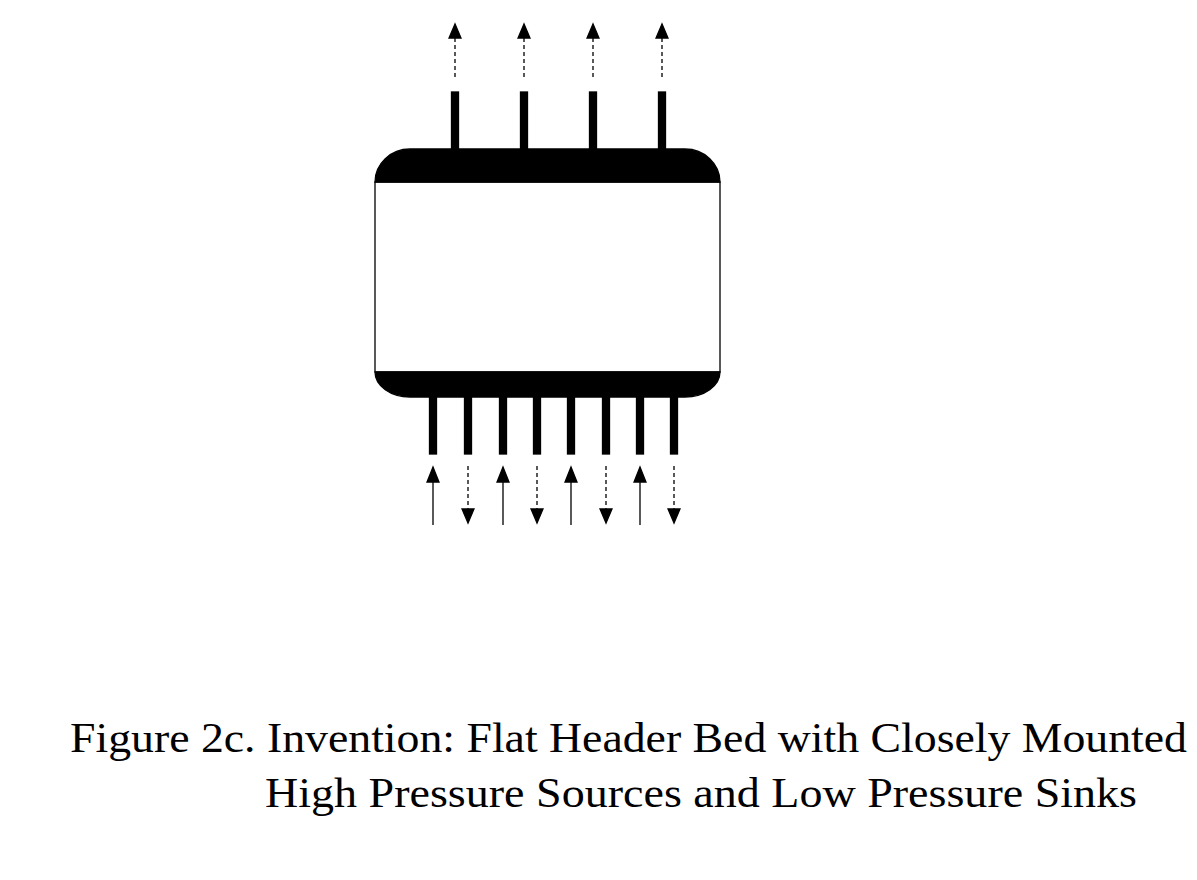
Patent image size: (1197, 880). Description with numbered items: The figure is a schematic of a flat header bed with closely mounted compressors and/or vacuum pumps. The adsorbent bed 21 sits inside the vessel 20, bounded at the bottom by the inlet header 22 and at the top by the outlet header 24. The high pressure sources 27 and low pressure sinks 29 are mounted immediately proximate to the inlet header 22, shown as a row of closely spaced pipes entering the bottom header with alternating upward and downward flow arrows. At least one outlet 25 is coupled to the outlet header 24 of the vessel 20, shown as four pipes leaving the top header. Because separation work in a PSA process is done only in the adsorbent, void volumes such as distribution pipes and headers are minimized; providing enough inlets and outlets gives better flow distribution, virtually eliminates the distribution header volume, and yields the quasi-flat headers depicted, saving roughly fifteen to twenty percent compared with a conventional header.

The vessel 20 is at (541, 274).
The adsorbent bed 21 is at (703, 287).
The inlet header 22 is at (406, 395).
The outlet header 24 is at (423, 149).
The outlet 25 is at (559, 109).
The high pressure source 27 is at (432, 432).
The low pressure sink 29 is at (675, 420).